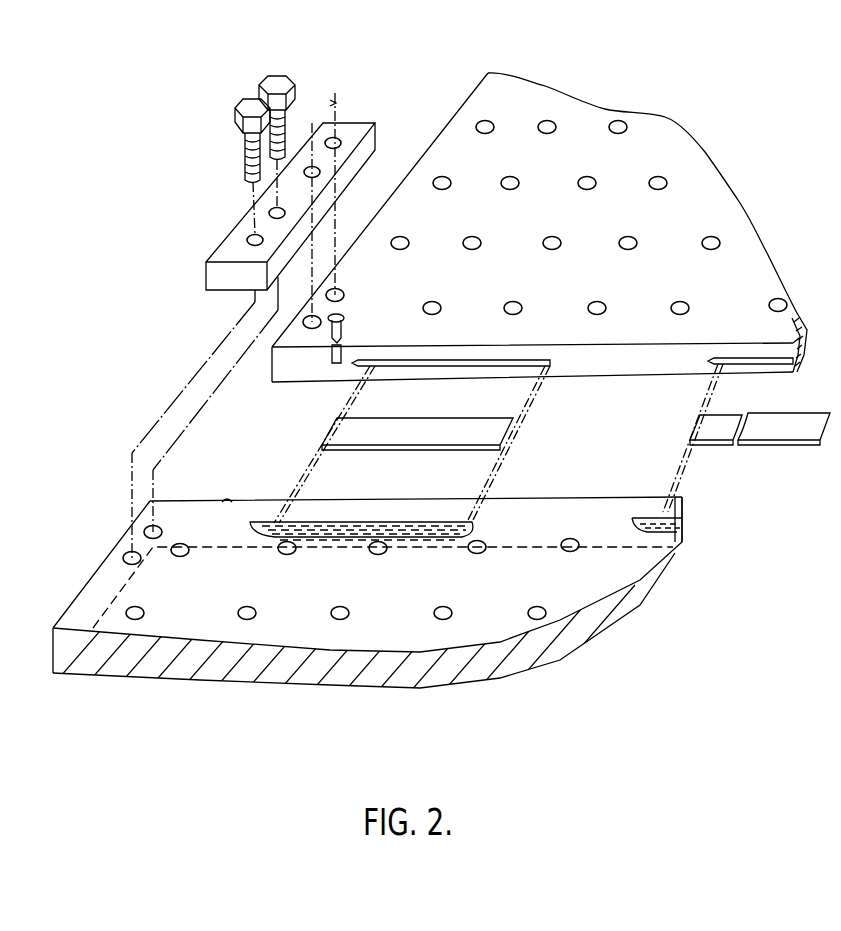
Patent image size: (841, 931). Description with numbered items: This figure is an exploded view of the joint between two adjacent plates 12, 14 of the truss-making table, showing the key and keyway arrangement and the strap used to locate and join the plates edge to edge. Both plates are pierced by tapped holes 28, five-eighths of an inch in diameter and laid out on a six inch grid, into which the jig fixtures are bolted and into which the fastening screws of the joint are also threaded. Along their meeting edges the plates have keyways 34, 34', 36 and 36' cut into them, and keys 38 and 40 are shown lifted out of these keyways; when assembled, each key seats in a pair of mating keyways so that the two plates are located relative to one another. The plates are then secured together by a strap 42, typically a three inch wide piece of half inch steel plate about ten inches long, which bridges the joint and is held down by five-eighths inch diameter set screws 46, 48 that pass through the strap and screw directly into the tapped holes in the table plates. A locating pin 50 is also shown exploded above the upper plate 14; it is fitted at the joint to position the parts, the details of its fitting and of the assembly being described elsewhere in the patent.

The plate 12 is at (89, 582).
The plate 14 is at (472, 94).
The holes 28 is at (655, 178).
The keyway 34 is at (435, 441).
The keyway 34' is at (405, 499).
The keyway 36 is at (746, 435).
The keyway 36' is at (691, 514).
The key 38 is at (512, 420).
The key 40 is at (790, 433).
The strap 42 is at (208, 244).
The set screw 46 is at (238, 106).
The set screw 48 is at (337, 103).
The locating pin 50 is at (343, 329).